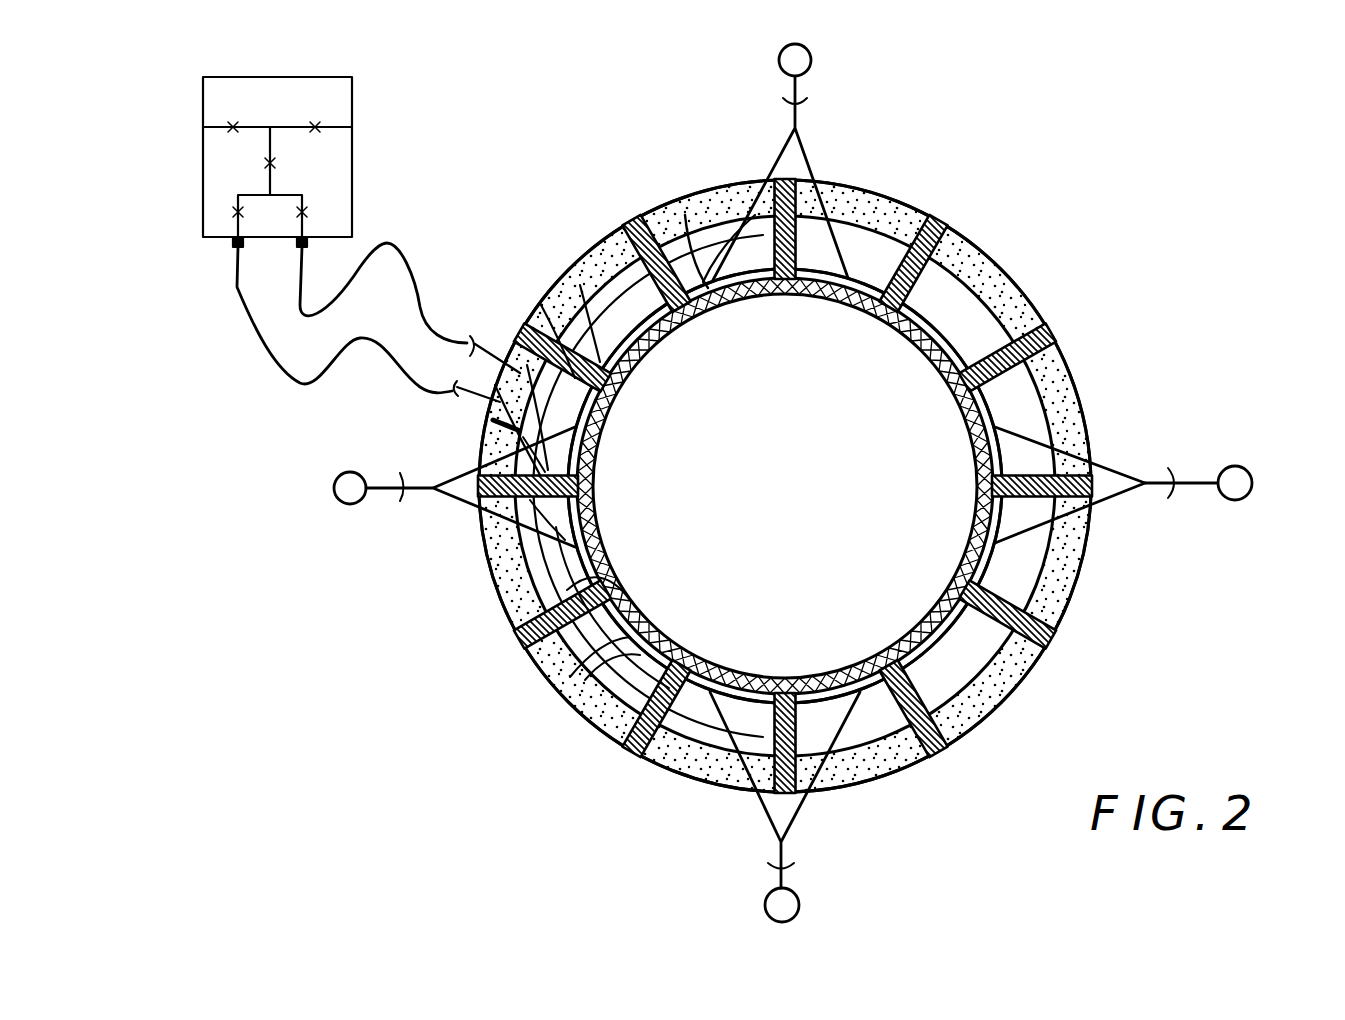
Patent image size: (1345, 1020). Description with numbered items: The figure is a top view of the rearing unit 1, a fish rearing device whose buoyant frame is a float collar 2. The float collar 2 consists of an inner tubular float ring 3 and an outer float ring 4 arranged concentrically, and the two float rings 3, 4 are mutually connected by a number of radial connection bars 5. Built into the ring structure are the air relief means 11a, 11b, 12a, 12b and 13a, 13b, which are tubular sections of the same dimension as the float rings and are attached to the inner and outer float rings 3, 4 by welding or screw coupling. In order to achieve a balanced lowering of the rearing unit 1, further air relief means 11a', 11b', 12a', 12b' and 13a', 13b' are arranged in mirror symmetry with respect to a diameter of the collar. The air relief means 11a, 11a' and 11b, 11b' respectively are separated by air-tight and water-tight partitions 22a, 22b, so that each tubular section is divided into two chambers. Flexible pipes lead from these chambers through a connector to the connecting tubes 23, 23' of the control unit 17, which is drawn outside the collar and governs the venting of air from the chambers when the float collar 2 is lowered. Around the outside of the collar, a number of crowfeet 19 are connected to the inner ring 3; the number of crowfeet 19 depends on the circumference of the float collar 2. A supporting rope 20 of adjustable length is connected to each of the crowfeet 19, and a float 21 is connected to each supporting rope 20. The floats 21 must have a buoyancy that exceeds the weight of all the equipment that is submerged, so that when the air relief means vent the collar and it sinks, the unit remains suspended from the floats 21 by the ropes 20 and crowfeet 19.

The rearing unit 1 is at (953, 152).
The float collar 2 is at (906, 798).
The inner tubular float ring 3 is at (950, 337).
The outer float ring 4 is at (987, 250).
The connection bars 5 is at (1058, 330).
The air relief means 11a is at (486, 543).
The air relief means 11b is at (440, 507).
The air relief means 11a' is at (525, 363).
The air relief means 11b' is at (485, 378).
The air relief means 12a is at (549, 628).
The air relief means 12b is at (533, 607).
The air relief means 12a' is at (613, 268).
The air relief means 12b' is at (546, 281).
The air relief means 13a is at (581, 717).
The air relief means 13b is at (529, 718).
The air relief means 13a' is at (737, 209).
The air relief means 13b' is at (675, 204).
The control unit 17 is at (352, 82).
The crowfeet 19 is at (1112, 478).
The supporting rope 20 is at (1196, 483).
The float 21 is at (1255, 468).
The partition 22a is at (598, 460).
The partition 22b is at (490, 417).
The connecting tube 23 is at (325, 324).
The connecting tube 23' is at (410, 273).